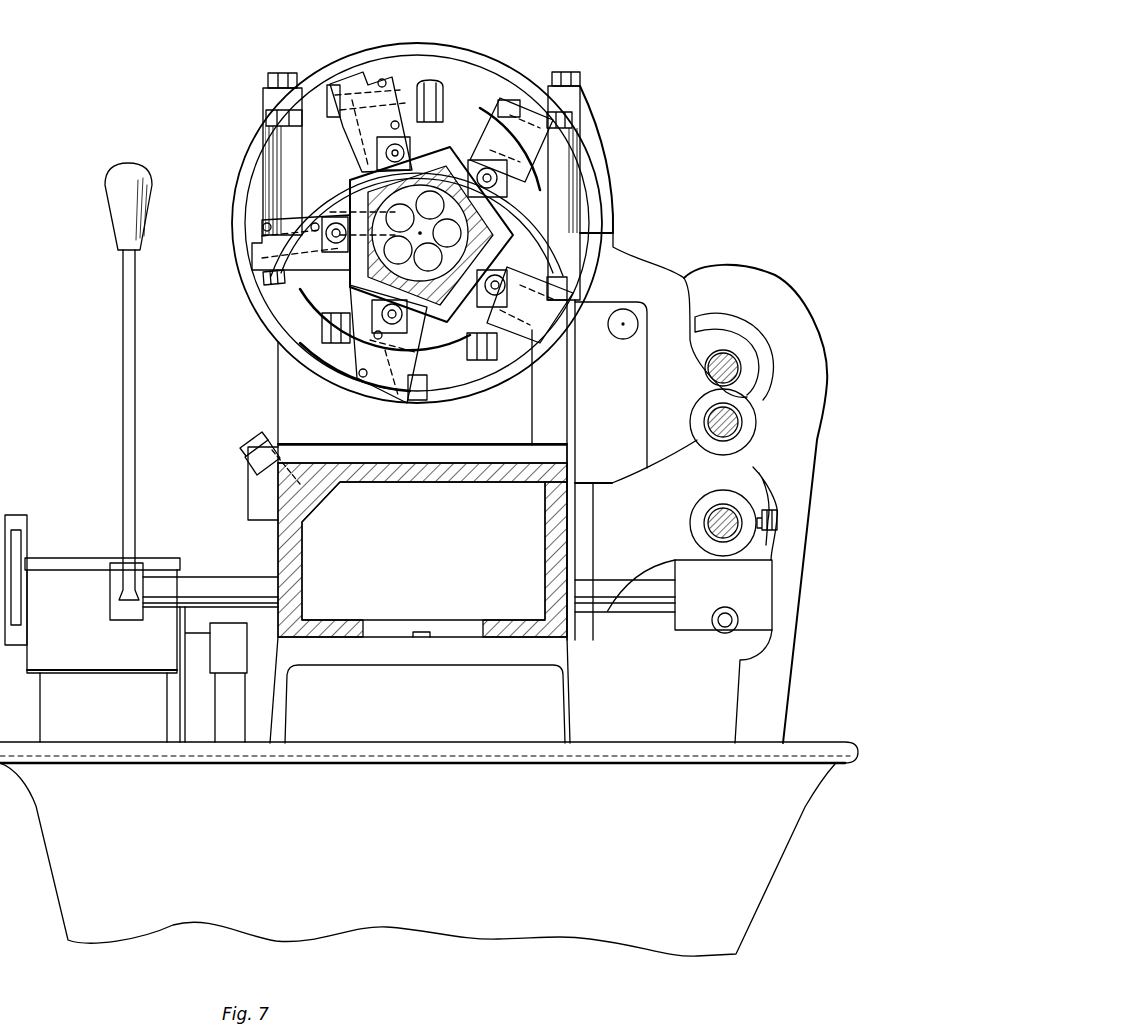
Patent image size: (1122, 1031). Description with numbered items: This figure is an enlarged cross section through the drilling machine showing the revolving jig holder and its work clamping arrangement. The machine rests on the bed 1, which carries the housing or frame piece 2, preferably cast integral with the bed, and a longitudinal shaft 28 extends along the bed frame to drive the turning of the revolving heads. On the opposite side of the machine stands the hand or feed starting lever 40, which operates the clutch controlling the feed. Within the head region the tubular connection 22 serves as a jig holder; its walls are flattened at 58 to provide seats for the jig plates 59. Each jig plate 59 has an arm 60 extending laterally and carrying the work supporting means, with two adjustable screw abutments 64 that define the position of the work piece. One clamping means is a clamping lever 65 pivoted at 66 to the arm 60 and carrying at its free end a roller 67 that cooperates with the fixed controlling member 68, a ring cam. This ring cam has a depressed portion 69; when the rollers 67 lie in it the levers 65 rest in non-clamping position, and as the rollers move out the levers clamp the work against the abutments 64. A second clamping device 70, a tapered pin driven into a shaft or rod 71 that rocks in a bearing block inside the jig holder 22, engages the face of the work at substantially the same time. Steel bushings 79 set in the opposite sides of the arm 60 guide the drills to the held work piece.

The bed 1 is at (543, 547).
The housing or frame piece 2 is at (247, 262).
The tubular connection 22 is at (543, 200).
The shaft 28 is at (733, 427).
The hand or feed starting lever 40 is at (130, 458).
The flattened wall portions 58 is at (547, 217).
The jig plate 59 is at (580, 112).
The arm 60 is at (380, 400).
The adjustable screw abutment 64 is at (263, 217).
The clamping lever 65 is at (400, 100).
The pivot 66 is at (510, 100).
The roller 67 is at (330, 330).
The fixed controlling member 68 is at (460, 100).
The depressed portion 69 is at (330, 360).
The clamping device 70 is at (313, 203).
The shaft or rod 71 is at (373, 90).
The steel bushing 79 is at (607, 253).